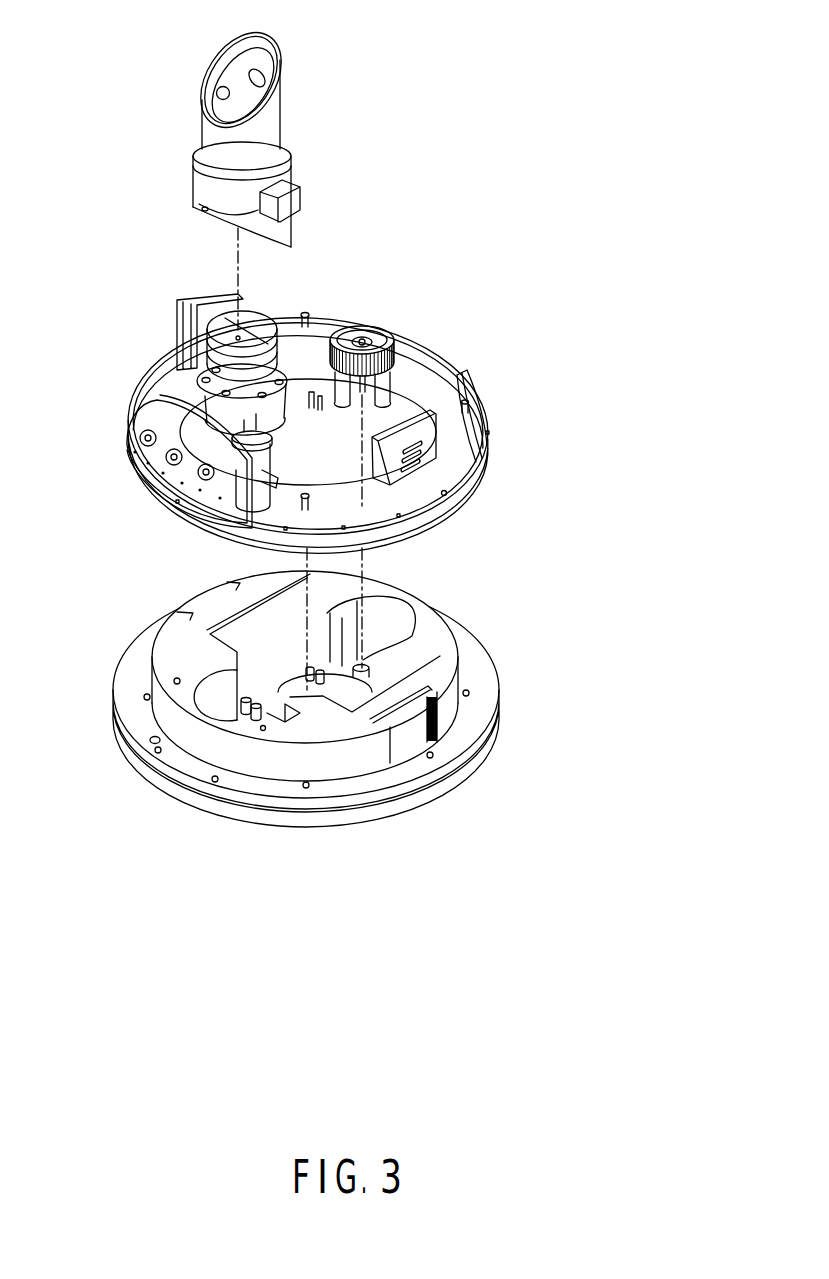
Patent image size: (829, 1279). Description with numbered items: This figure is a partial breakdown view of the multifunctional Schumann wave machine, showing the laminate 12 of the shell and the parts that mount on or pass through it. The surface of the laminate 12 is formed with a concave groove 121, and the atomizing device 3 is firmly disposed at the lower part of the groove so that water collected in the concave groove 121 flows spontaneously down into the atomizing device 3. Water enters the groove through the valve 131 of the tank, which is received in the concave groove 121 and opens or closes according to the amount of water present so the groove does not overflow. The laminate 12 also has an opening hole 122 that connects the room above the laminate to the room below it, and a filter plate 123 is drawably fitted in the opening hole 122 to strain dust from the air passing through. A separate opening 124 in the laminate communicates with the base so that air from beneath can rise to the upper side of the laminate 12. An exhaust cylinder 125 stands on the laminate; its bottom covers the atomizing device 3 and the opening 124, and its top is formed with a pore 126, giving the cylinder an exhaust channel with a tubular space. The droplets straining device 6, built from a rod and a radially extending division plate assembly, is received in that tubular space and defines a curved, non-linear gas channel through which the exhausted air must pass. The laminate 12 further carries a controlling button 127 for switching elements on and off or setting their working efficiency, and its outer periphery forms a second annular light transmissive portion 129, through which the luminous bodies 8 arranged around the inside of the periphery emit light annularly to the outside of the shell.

The exhaust cylinder 125 is at (210, 137).
The pore 126 is at (253, 81).
The droplets straining device 6 is at (259, 328).
The valve 131 is at (364, 333).
The filter plate 123 is at (430, 437).
The atomizing device 3 is at (340, 486).
The luminous bodies 8 is at (447, 494).
The controlling button 127 is at (147, 439).
The second annular light transmissive portion 129 is at (185, 797).
The laminate 12 is at (430, 632).
The concave groove 121 is at (220, 697).
The opening 124 is at (296, 722).
The opening hole 122 is at (417, 735).